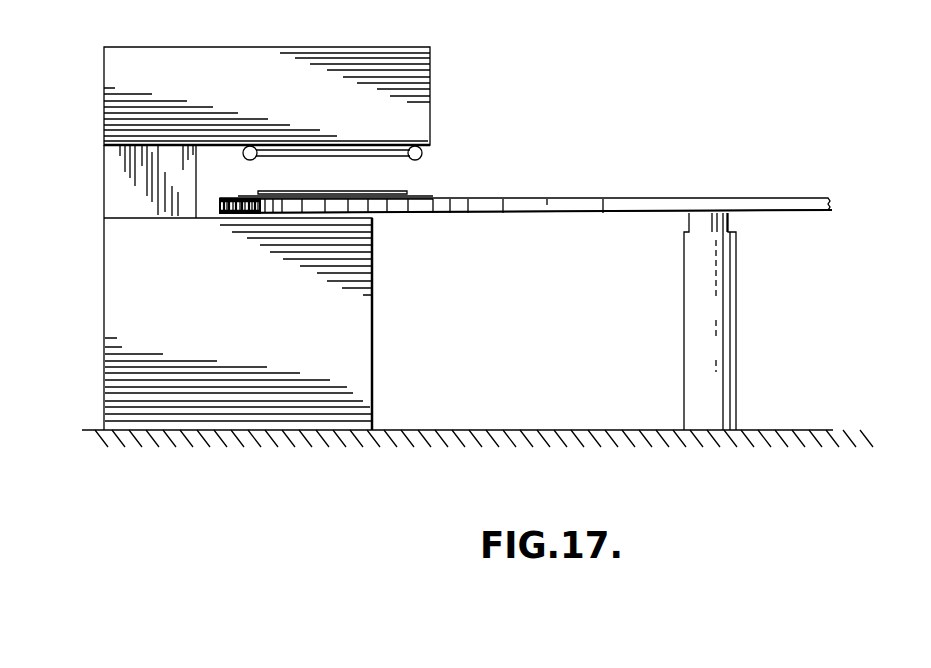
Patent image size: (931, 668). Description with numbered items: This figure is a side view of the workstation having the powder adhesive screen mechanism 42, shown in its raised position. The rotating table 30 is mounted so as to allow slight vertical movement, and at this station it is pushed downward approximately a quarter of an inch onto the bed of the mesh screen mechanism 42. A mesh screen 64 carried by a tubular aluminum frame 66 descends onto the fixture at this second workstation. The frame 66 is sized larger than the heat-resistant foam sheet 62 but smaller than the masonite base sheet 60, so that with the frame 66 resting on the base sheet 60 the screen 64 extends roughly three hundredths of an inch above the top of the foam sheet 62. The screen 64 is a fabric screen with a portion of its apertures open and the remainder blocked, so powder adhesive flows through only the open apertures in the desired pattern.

The table 30 is at (652, 208).
The mesh screen mechanism 42 is at (117, 338).
The masonite base sheet 60 is at (245, 197).
The heat-resistant foam sheet 62 is at (323, 190).
The mesh screen 64 is at (338, 157).
The tubular aluminum frame 66 is at (422, 156).